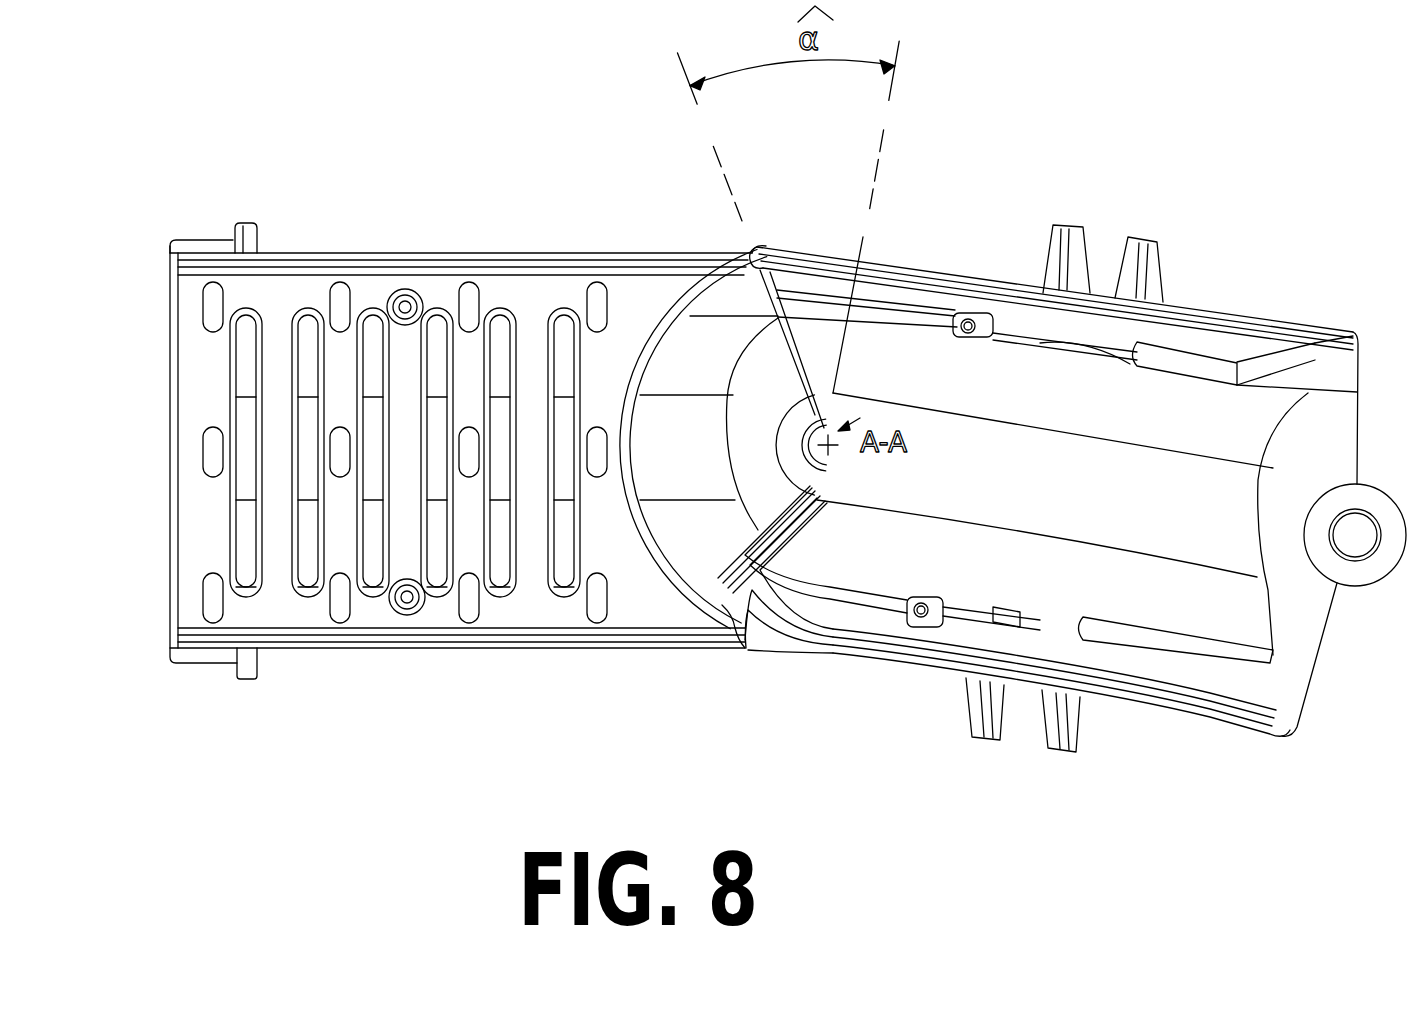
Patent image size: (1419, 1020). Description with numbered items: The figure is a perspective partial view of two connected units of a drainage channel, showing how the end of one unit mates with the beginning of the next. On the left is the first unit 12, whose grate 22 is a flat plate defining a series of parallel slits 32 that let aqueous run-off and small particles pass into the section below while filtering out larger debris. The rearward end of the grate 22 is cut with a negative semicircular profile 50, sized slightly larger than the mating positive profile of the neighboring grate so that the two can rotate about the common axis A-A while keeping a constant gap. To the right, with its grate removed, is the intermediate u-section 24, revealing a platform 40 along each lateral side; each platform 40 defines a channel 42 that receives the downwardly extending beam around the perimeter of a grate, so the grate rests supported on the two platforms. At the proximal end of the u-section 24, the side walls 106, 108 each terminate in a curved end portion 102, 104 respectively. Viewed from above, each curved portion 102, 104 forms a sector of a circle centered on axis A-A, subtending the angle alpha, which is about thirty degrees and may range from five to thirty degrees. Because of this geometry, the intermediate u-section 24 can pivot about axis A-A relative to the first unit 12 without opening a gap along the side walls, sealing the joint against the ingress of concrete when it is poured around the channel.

The unit 12 is at (433, 255).
The grate 22 is at (330, 648).
The u-section 24 is at (497, 648).
The slits 32 is at (256, 377).
The platform 40 is at (946, 323).
The channel 42 is at (937, 297).
The negative semicircular profile 50 is at (634, 452).
The curved end portion 102 is at (747, 628).
The curved end portion 104 is at (820, 262).
The side wall 106 is at (917, 657).
The side wall 108 is at (1190, 322).